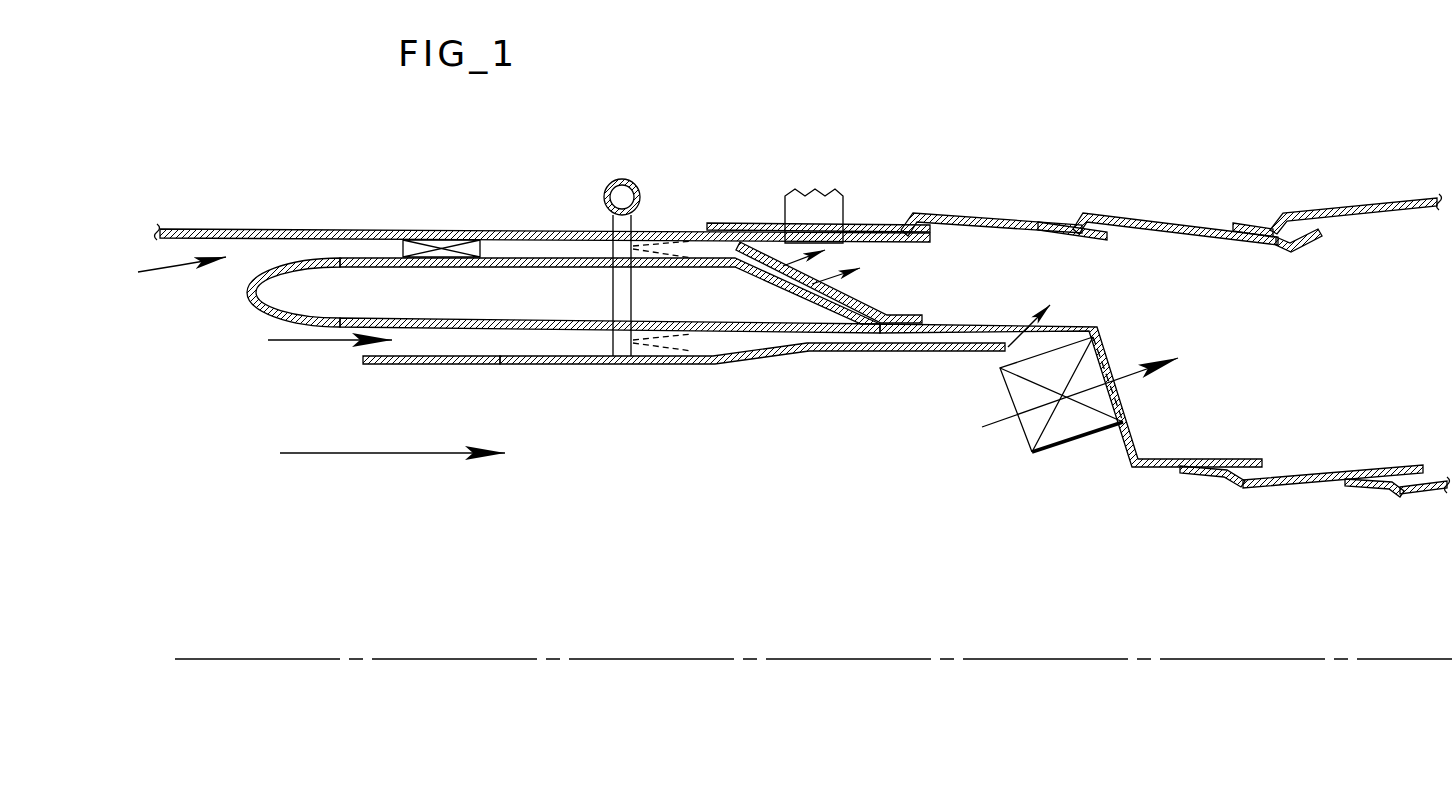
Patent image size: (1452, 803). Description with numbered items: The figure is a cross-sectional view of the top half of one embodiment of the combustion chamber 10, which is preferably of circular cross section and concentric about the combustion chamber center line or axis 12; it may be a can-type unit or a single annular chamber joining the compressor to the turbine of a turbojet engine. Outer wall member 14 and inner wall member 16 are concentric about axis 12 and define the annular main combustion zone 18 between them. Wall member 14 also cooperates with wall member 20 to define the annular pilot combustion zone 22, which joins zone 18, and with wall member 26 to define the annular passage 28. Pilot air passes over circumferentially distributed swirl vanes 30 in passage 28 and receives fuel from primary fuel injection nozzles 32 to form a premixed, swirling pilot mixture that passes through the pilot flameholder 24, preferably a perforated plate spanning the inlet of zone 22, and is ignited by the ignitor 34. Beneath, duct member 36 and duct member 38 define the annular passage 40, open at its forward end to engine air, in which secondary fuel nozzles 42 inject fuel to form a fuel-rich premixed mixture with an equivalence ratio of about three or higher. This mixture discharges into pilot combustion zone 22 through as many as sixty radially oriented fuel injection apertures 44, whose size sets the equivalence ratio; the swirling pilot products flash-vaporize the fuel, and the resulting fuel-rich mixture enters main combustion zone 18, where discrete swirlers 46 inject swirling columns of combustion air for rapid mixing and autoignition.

The combustion chamber 10 is at (1074, 118).
The combustion chamber center line or axis 12 is at (463, 657).
The outer wall member 14 is at (1178, 226).
The inner wall member 16 is at (1315, 479).
The main combustion zone or chamber 18 is at (1313, 354).
The wall member 20 is at (946, 333).
The pilot combustion zone 22 is at (995, 285).
The pilot flameholder 24 is at (770, 250).
The wall member 26 is at (553, 261).
The annular passage 28 is at (517, 240).
The swirl vanes 30 is at (443, 239).
The primary fuel injection nozzles 32 is at (626, 221).
The ignitor 34 is at (836, 204).
The duct member 36 is at (404, 363).
The duct member 38 is at (491, 326).
The annular passage 40 is at (553, 352).
The secondary fuel nozzles 42 is at (623, 350).
The fuel injection apertures 44 is at (1018, 341).
The swirlers 46 is at (1080, 424).